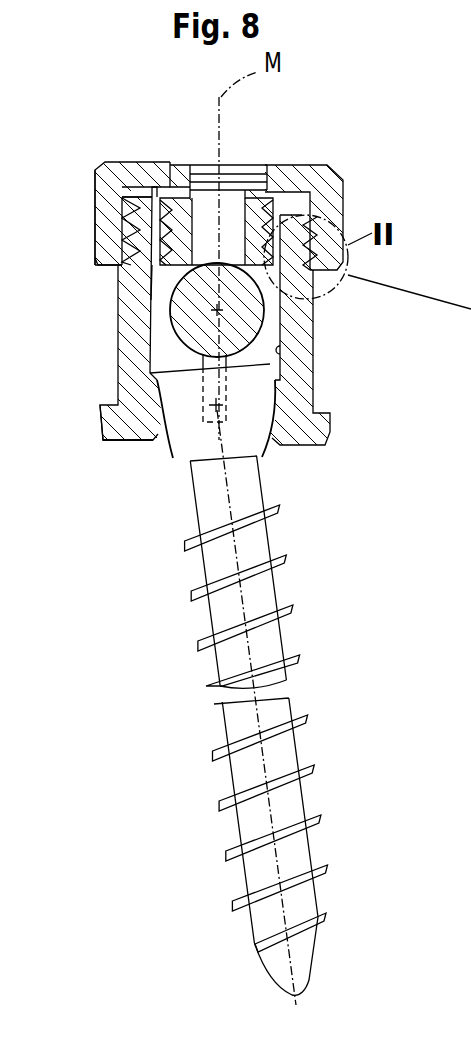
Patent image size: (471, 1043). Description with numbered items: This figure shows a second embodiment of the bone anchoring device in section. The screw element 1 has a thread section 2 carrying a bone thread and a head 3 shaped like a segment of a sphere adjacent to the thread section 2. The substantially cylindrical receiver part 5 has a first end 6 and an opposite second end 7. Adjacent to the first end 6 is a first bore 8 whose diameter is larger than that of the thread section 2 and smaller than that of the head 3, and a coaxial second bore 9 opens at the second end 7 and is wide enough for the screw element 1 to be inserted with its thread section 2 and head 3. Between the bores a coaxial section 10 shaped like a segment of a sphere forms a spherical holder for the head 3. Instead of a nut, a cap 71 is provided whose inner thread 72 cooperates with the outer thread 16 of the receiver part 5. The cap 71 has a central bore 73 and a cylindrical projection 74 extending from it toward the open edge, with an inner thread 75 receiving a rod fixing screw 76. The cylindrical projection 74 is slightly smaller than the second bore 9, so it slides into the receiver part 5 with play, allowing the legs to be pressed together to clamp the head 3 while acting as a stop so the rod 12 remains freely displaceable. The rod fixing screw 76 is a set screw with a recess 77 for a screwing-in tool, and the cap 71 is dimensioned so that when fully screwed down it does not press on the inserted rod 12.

The screw element 1 is at (314, 788).
The thread section 2 is at (215, 618).
The head 3 is at (256, 443).
The receiver part 5 is at (110, 358).
The first end 6 is at (123, 445).
The second end 7 is at (150, 189).
The first bore 8 is at (158, 443).
The second bore 9 is at (283, 360).
The coaxial section 10 is at (157, 422).
The rod 12 is at (262, 317).
The outer thread 16 is at (103, 264).
The cap 71 is at (344, 164).
The inner thread 72 is at (115, 208).
The central bore 73 is at (255, 182).
The cylindrical projection 74 is at (130, 246).
The inner thread 75 is at (128, 273).
The rod fixing screw 76 is at (180, 193).
The recess 77 is at (205, 192).